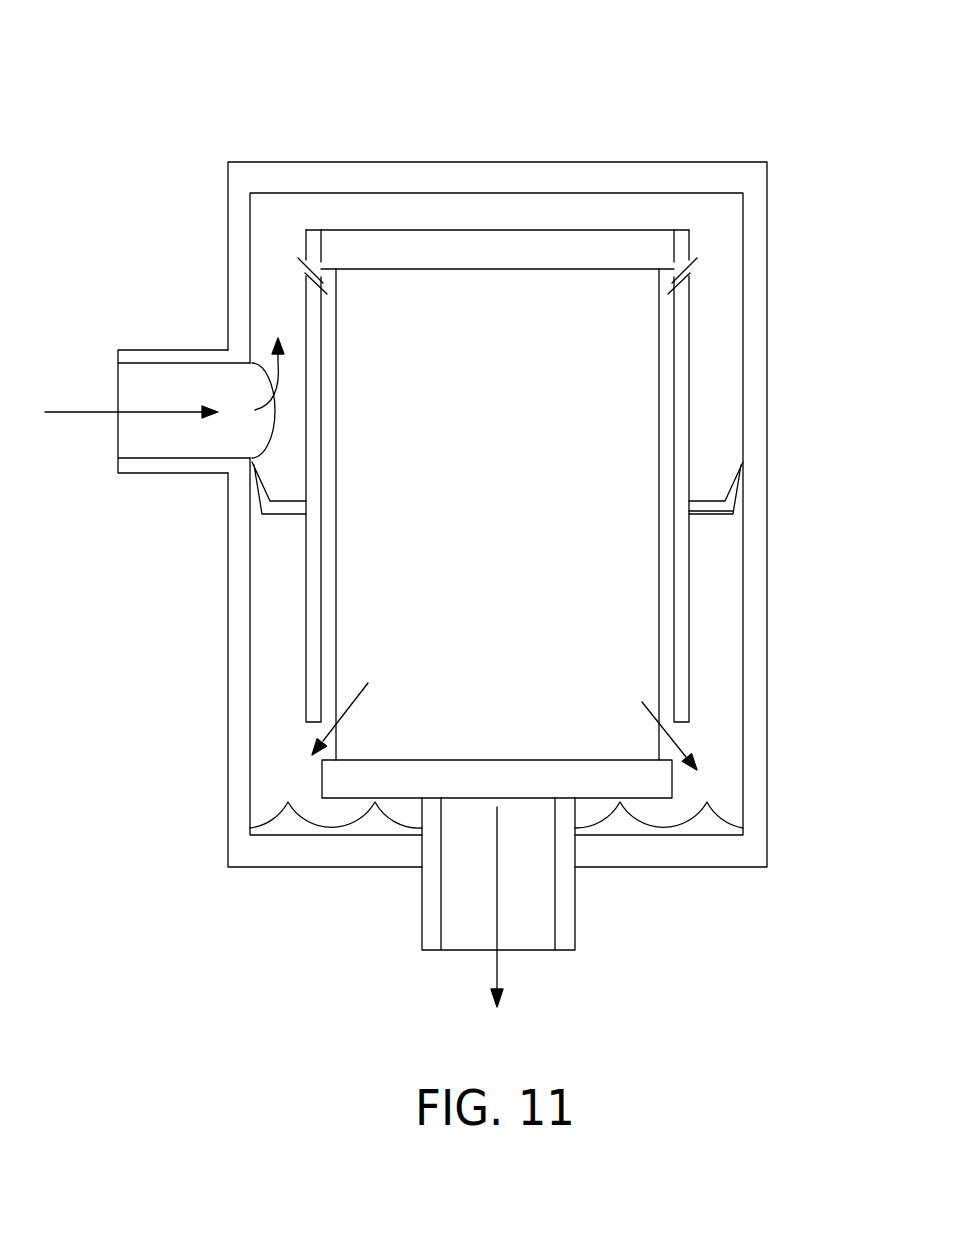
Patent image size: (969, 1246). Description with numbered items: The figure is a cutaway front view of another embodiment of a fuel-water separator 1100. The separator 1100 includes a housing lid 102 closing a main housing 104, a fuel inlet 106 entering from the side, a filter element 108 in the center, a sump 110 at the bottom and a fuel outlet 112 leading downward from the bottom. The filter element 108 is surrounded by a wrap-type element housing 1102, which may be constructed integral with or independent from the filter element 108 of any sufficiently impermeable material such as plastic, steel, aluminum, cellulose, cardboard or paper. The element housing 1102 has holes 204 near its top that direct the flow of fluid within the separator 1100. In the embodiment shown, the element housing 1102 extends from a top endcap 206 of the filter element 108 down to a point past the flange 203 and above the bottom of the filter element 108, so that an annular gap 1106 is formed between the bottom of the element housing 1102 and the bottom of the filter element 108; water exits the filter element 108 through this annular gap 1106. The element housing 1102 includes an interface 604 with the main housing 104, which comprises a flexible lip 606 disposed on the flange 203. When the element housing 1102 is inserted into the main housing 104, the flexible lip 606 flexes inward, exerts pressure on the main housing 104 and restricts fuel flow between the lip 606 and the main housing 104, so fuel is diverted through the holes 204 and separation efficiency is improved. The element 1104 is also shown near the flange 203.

The fuel-water separator 1100 is at (200, 78).
The housing lid 102 is at (228, 180).
The main housing 104 is at (228, 237).
The fuel inlet 106 is at (128, 372).
The filter element 108 is at (518, 525).
The sump 110 is at (277, 830).
The fuel outlet 112 is at (462, 930).
The flange 203 is at (700, 497).
The holes 204 is at (333, 292).
The top endcap 206 is at (520, 267).
The interface 604 is at (743, 472).
The flexible lip 606 is at (735, 503).
The wrap-type element housing 1102 is at (688, 353).
The baffle support 1104 is at (690, 513).
The annular gap 1106 is at (678, 742).